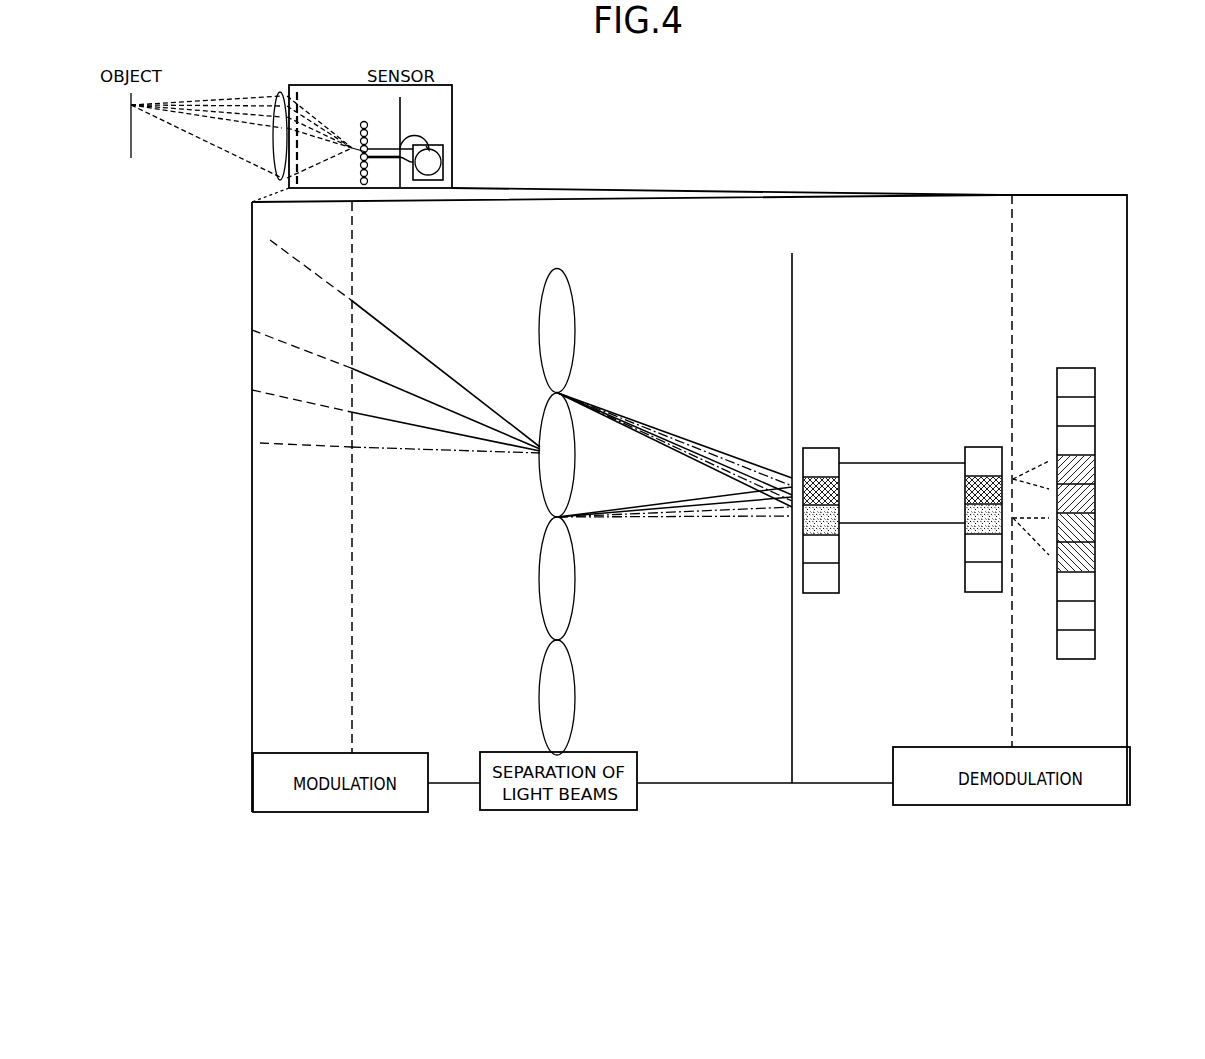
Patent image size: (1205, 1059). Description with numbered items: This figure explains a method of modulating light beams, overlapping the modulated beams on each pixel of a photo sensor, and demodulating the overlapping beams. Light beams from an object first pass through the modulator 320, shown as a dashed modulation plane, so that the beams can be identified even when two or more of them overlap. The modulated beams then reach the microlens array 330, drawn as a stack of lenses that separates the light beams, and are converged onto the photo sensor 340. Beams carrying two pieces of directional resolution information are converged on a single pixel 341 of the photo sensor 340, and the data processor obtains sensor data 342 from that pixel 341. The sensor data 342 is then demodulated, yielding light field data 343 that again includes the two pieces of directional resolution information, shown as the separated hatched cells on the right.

The modulator 320 is at (353, 255).
The microlens array 330 is at (565, 305).
The photo sensor 340 is at (792, 280).
The pixel 341 is at (822, 480).
The sensor data 342 is at (986, 480).
The light field data 343 is at (1101, 456).